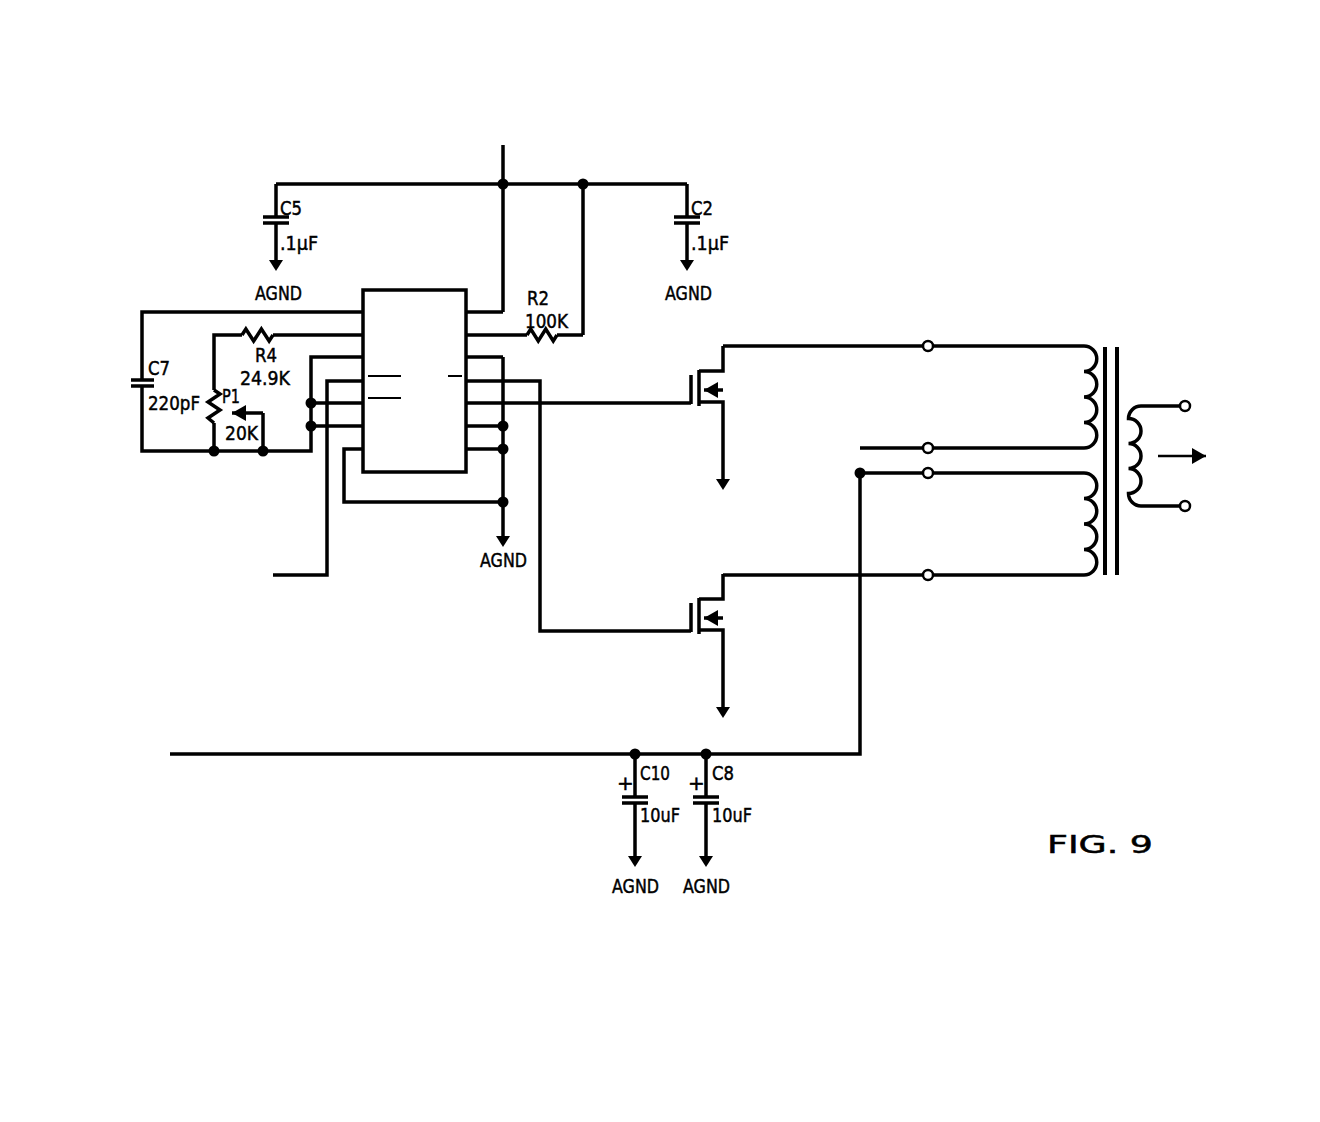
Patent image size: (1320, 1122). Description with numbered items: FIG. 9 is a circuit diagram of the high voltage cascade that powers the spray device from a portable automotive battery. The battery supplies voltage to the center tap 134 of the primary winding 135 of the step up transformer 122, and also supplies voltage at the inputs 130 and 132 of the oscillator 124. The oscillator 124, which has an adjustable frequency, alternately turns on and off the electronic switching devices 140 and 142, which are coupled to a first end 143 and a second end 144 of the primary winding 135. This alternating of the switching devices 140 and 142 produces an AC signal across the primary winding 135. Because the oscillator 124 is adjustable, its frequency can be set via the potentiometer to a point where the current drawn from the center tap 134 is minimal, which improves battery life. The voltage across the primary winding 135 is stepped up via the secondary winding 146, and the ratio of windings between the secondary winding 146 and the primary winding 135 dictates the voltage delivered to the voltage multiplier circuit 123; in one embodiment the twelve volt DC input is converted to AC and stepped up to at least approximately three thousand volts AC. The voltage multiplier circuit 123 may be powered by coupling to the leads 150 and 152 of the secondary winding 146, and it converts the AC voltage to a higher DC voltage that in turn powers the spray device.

The step up transformer 122 is at (988, 447).
The voltage multiplier circuit 123 is at (1178, 456).
The oscillator 124 is at (403, 514).
The input 130 is at (289, 577).
The input 132 is at (500, 170).
The center tap 134 is at (196, 774).
The primary winding 135 is at (1087, 338).
The electronic switching device 140 is at (690, 378).
The electronic switching device 142 is at (690, 606).
The first end 143 is at (957, 346).
The second end 144 is at (1006, 577).
The secondary winding 146 is at (1146, 394).
The lead 150 is at (1190, 404).
The lead 152 is at (1190, 505).